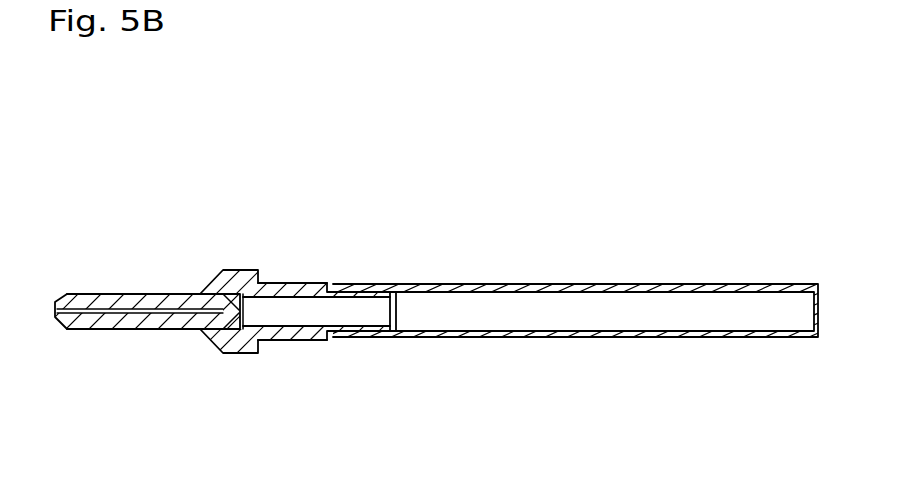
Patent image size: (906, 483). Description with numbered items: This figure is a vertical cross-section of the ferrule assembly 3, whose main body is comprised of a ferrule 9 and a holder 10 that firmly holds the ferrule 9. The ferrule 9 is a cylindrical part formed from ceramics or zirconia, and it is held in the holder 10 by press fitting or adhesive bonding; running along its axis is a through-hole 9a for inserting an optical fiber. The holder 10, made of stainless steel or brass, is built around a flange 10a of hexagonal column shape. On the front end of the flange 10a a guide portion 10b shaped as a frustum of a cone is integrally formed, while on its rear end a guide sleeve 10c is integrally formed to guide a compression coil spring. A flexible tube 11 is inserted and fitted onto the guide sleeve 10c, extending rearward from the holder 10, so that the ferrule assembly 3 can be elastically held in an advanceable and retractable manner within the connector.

The ferrule assembly 3 is at (513, 218).
The ferrule 9 is at (116, 296).
The through-hole 9a is at (60, 322).
The holder 10 is at (238, 269).
The flange 10a is at (250, 278).
The guide portion 10b is at (212, 281).
The guide sleeve 10c is at (297, 288).
The flexible tube 11 is at (665, 295).